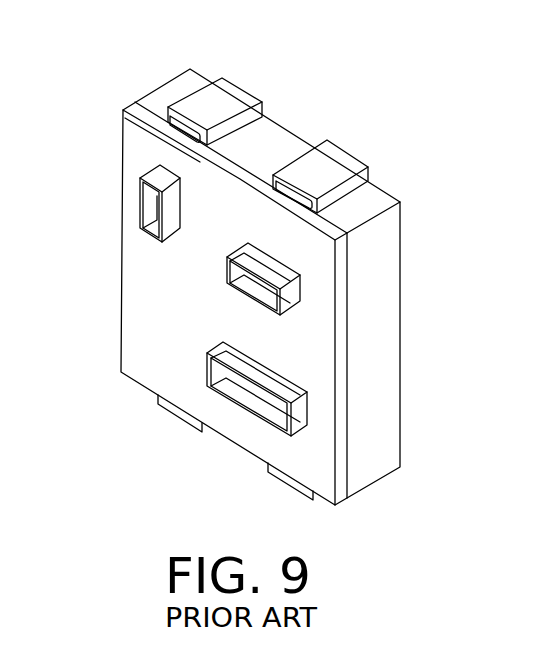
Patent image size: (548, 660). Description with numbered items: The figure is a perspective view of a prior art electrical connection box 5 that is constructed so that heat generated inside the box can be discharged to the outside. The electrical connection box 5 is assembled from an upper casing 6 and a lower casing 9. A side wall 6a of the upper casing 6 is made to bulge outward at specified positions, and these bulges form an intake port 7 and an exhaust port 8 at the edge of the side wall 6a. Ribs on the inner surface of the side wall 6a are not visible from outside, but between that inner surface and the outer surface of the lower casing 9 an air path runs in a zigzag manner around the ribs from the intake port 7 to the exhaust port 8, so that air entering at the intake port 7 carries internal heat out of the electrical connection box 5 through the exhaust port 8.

The electrical connection box 5 is at (105, 81).
The upper casing 6 is at (165, 96).
The side wall 6a is at (277, 142).
The intake port 7 is at (183, 418).
The exhaust port 8 is at (178, 141).
The lower casing 9 is at (133, 158).